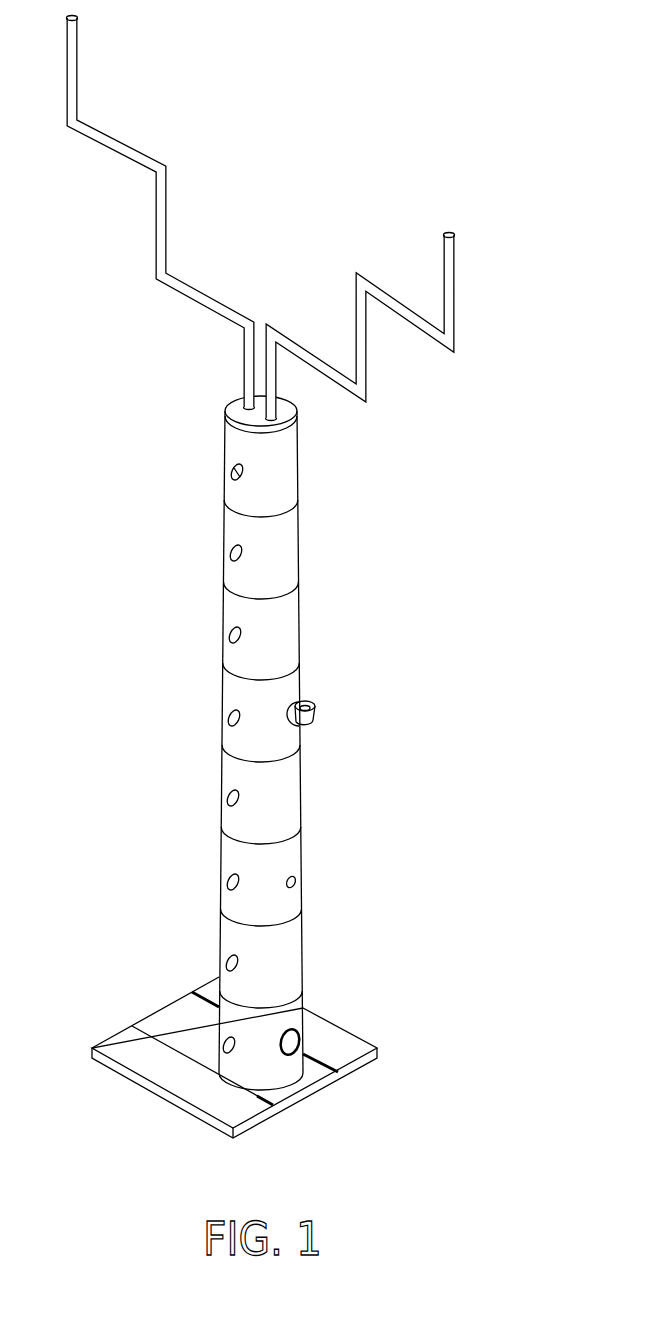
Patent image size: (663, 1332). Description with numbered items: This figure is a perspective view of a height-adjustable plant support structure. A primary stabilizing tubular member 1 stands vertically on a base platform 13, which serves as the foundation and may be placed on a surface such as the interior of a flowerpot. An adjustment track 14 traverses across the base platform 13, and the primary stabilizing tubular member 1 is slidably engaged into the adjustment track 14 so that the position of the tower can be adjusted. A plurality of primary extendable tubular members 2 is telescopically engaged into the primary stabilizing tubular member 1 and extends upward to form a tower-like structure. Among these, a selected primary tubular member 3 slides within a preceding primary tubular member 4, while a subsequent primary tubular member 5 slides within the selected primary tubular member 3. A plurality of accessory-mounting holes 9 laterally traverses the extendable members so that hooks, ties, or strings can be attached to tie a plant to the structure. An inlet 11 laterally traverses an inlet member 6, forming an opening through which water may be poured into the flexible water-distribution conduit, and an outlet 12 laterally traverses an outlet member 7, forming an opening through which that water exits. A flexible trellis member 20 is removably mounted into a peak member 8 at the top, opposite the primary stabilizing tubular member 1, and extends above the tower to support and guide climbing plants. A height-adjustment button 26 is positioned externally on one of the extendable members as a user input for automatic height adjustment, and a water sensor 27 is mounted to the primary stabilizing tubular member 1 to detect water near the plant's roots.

The primary stabilizing tubular member 1 is at (283, 1078).
The plurality of primary extendable tubular members 2 is at (148, 749).
The selected primary tubular member 3 is at (232, 690).
The preceding primary tubular member 4 is at (232, 603).
The subsequent primary tubular member 5 is at (232, 527).
The inlet member 6 is at (302, 730).
The outlet member 7 is at (272, 1016).
The peak member 8 is at (287, 453).
The plurality of accessory-mounting holes 9 is at (226, 880).
The inlet 11 is at (316, 703).
The outlet 12 is at (296, 1040).
The base platform 13 is at (123, 1042).
The adjustment track 14 is at (191, 1003).
The flexible trellis member 20 is at (452, 257).
The height-adjustment button 26 is at (295, 878).
The water sensor 27 is at (222, 1044).